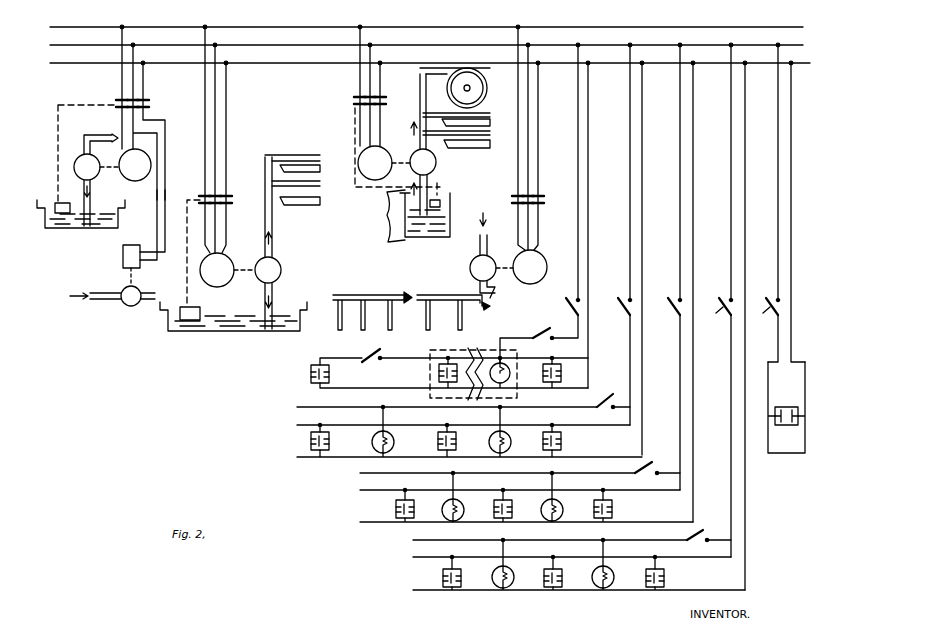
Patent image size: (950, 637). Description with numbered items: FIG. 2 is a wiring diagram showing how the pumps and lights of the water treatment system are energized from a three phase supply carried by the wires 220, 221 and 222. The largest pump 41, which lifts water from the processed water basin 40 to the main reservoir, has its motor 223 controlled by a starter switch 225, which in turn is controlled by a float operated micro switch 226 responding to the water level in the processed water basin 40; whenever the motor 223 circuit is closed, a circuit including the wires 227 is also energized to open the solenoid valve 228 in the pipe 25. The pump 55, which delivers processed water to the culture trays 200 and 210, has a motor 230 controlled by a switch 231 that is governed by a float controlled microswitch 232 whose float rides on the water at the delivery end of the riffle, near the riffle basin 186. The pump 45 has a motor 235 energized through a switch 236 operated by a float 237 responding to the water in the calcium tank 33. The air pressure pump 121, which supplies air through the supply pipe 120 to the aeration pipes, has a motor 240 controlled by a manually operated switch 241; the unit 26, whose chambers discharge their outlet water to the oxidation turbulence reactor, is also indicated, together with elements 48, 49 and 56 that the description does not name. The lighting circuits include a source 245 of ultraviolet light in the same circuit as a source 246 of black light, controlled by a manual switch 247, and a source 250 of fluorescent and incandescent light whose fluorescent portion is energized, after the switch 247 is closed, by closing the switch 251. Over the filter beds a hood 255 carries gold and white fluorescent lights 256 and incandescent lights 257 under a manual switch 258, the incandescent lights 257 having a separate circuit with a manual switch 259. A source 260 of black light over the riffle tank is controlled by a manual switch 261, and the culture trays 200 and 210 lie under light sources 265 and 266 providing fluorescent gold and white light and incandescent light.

The supply wire 220 is at (91, 26).
The supply wire 221 is at (72, 44).
The supply wire 222 is at (97, 63).
The starter switch 225 is at (148, 104).
The pump 41 is at (79, 157).
The motor 223 is at (129, 178).
The float operated micro switch 226 is at (60, 200).
The processed water basin 40 is at (75, 231).
The wires 227 is at (158, 197).
The solenoid valve 228 is at (124, 291).
The pipe 25 is at (110, 300).
The switch 231 is at (231, 200).
The motor 230 is at (226, 265).
The float controlled microswitch 232 is at (193, 312).
The riffle basin 186 is at (235, 333).
The pump 55 is at (283, 270).
The pipe 56 is at (280, 243).
The heat exchanger 48 is at (292, 159).
The heat exchanger bar 49 is at (296, 177).
The culture tank 200 is at (315, 168).
The culture tank 210 is at (315, 199).
The unit 26 is at (481, 85).
The switch 236 is at (383, 97).
The motor 235 is at (384, 154).
The pump 45 is at (436, 164).
The float 237 is at (444, 198).
The calcium tank 33 is at (441, 208).
The manually controlled switch 241 is at (540, 199).
The motor 240 is at (540, 259).
The air pressure pump 121 is at (470, 267).
The supply pipe 120 is at (472, 292).
The source of ultraviolet light 245 is at (310, 380).
The source of fluorescent and incandescent light 250 is at (482, 349).
The switch 251 is at (545, 333).
The manual switch 247 is at (561, 179).
The source of black light 246 is at (572, 377).
The light source 265 is at (343, 463).
The light source 266 is at (395, 531).
The hood 255 is at (435, 598).
The gold and white fluorescent light 256 is at (443, 580).
The incandescent light 257 is at (498, 589).
The manual switch 259 is at (696, 536).
The manual switch 258 is at (715, 300).
The manual switch 261 is at (765, 202).
The source of black light 260 is at (787, 428).